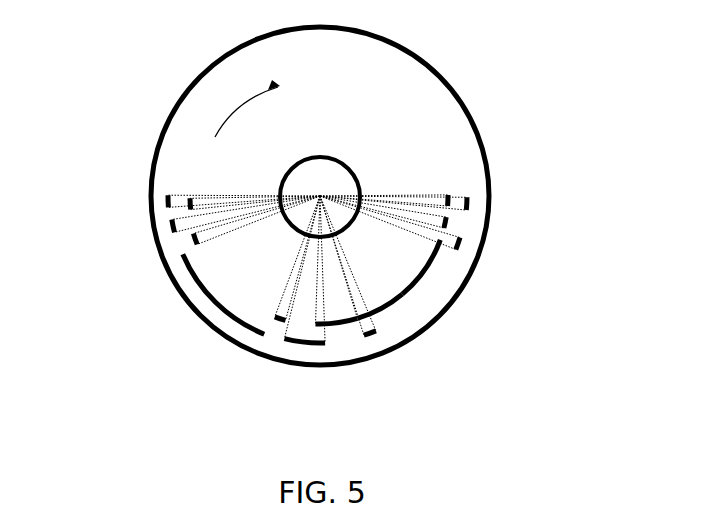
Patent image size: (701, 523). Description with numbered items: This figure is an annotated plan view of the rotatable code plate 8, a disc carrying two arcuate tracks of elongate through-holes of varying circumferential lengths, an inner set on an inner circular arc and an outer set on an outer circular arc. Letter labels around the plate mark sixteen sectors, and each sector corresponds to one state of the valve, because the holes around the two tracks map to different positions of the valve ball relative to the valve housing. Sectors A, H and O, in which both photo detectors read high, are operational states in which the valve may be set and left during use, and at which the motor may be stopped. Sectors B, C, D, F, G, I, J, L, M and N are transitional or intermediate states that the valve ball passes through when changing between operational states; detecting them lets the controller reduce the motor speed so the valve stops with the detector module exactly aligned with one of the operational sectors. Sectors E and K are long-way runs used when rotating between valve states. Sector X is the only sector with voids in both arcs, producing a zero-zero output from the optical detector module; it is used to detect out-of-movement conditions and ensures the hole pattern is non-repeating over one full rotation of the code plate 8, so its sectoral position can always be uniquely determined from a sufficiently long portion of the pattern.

The code plate 8 is at (165, 108).
The sector X is at (345, 105).
The sector A is at (160, 192).
The sector B is at (163, 206).
The sector C is at (162, 237).
The sector D is at (170, 253).
The sector E is at (212, 320).
The sector F is at (263, 348).
The sector G is at (290, 360).
The sector H is at (321, 362).
The sector I is at (357, 360).
The sector J is at (387, 357).
The sector K is at (428, 300).
The sector L is at (470, 262).
The sector M is at (472, 222).
The sector N is at (480, 195).
The sector O is at (465, 182).